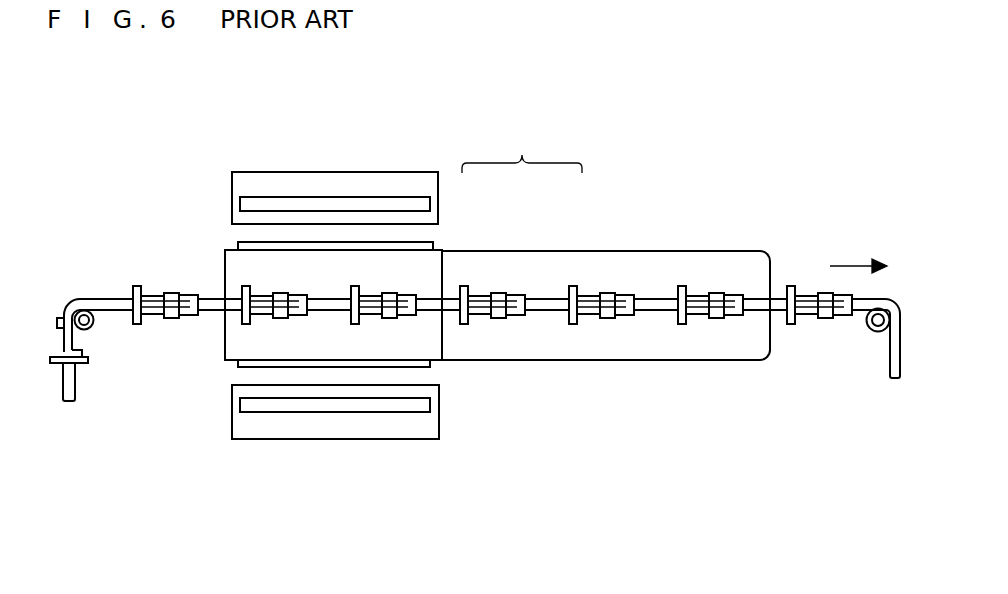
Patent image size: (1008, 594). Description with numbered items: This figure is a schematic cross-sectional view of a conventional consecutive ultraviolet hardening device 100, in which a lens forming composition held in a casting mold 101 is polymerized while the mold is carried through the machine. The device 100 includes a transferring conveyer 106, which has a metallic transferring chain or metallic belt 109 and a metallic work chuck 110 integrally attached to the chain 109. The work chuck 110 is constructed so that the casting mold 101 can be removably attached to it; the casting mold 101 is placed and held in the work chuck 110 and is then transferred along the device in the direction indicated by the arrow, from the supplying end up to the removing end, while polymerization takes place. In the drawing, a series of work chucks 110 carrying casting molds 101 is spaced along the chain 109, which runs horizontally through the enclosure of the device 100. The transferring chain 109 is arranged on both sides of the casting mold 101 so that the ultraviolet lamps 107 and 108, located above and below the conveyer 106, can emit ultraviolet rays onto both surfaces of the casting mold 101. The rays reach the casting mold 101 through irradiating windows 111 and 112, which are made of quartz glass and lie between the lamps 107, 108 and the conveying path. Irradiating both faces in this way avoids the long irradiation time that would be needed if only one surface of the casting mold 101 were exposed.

The consecutive ultraviolet hardening device 100 is at (667, 162).
The casting mold 101 is at (732, 302).
The transferring conveyer 106 is at (547, 144).
The ultraviolet lamp 107 is at (328, 180).
The ultraviolet lamp 108 is at (328, 430).
The metallic transferring chain 109 is at (548, 302).
The work chuck 110 is at (482, 303).
The irradiating window 111 is at (247, 247).
The irradiating window 112 is at (245, 366).